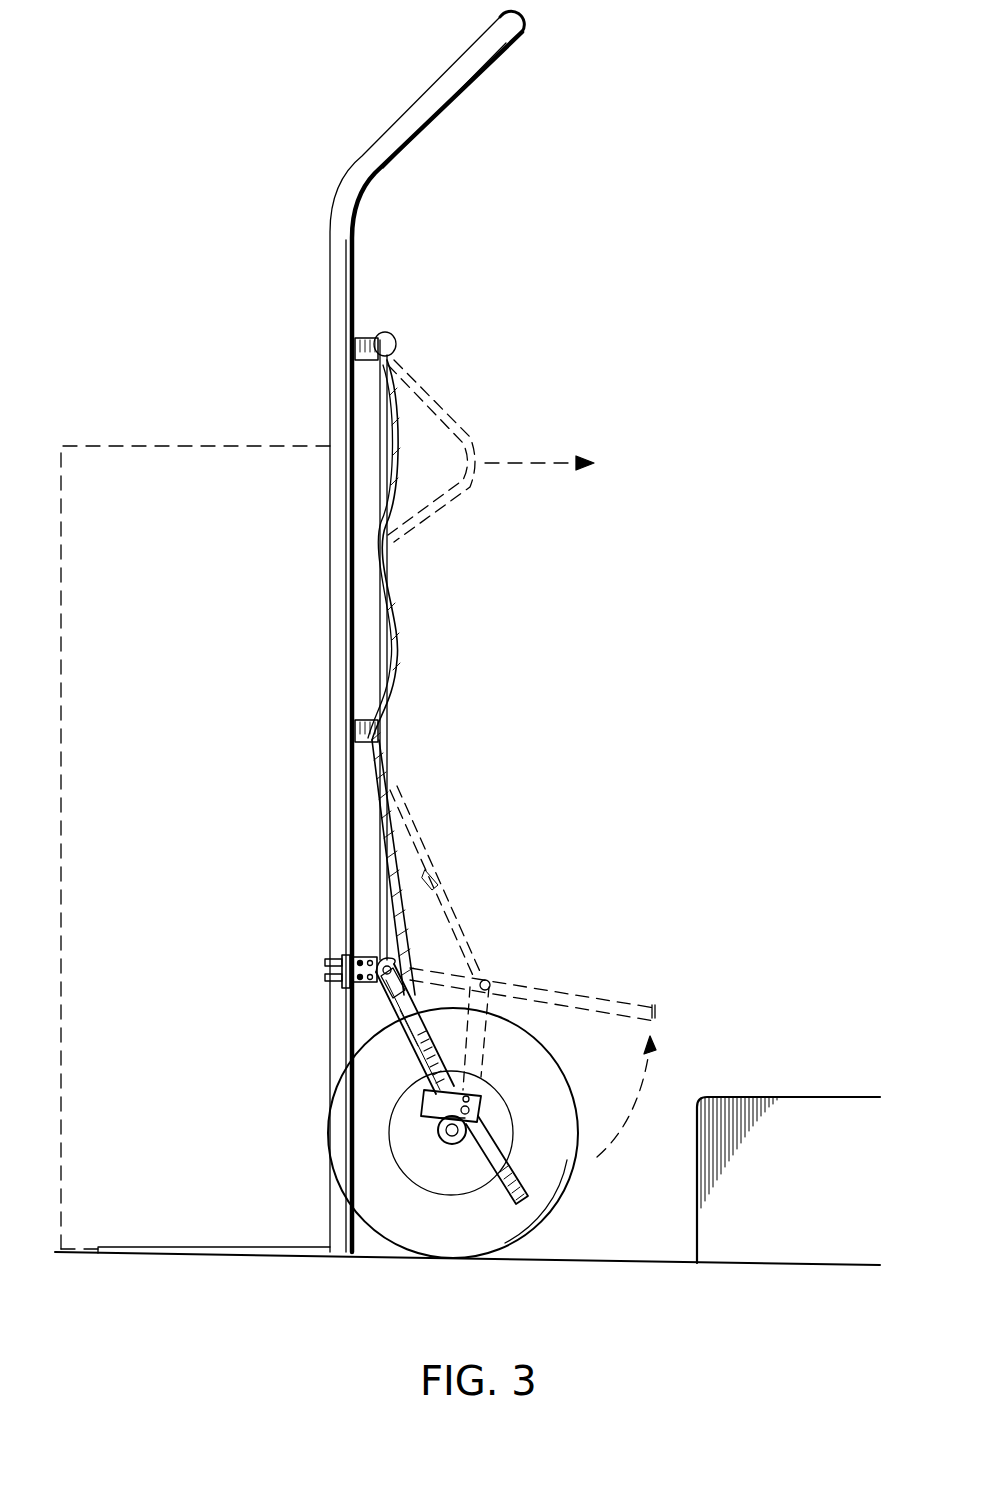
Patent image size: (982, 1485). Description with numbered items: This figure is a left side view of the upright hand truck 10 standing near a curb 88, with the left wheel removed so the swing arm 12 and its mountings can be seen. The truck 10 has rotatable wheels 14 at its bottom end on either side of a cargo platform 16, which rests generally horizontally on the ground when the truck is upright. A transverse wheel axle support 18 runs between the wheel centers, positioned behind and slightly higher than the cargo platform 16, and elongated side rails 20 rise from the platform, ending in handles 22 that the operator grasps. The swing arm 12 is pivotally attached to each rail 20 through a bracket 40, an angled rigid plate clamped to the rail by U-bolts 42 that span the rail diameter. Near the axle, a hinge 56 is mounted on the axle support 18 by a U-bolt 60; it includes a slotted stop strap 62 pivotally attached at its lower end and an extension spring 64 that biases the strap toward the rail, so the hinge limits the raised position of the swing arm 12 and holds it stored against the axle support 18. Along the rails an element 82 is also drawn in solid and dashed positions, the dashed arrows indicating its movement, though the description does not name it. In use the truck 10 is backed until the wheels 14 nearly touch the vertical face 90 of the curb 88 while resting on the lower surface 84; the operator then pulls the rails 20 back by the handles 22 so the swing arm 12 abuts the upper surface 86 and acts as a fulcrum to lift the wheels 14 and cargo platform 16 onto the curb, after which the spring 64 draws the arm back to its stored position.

The upright hand truck 10 is at (545, 300).
The swing arm 12 is at (615, 1003).
The wheel 14 is at (483, 1225).
The cargo platform 16 is at (140, 1247).
The wheel axle support 18 is at (440, 1139).
The side rail 20 is at (357, 228).
The handle 22 is at (520, 38).
The bracket 40 is at (345, 958).
The U-bolt 42 is at (325, 977).
The hinge 56 is at (437, 1100).
The U-bolt 60 is at (452, 1144).
The stop strap 62 is at (438, 1070).
The extension spring 64 is at (440, 1066).
The retaining strap 82 is at (398, 447).
The lower surface 84 is at (652, 1262).
The upper surface 86 is at (838, 1097).
The curb 88 is at (753, 1097).
The vertical face 90 is at (697, 1185).